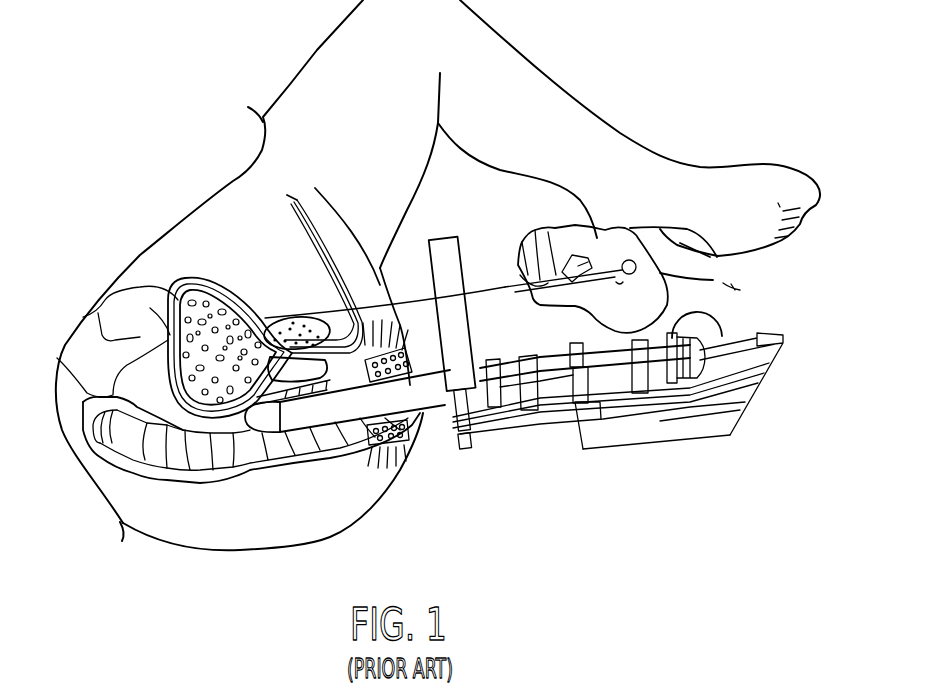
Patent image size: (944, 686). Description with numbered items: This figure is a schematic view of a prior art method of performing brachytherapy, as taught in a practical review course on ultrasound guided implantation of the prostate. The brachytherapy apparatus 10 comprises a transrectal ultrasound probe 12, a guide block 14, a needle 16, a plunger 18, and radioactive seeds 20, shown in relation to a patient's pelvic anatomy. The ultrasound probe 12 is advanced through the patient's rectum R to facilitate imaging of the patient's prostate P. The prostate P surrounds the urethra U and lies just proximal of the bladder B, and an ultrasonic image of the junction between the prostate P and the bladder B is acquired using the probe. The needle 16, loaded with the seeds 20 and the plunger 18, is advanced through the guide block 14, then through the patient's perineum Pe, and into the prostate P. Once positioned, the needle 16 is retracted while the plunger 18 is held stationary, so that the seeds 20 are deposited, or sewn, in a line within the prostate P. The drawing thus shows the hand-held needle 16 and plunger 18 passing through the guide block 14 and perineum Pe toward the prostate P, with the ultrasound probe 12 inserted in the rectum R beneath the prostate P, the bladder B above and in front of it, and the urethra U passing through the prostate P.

The brachytherapy apparatus 10 is at (786, 284).
The transrectal ultrasound probe 12 is at (434, 393).
The guide block 14 is at (452, 263).
The needle 16 is at (488, 291).
The plunger 18 is at (613, 266).
The radioactive seeds 20 is at (288, 330).
The bladder B is at (200, 292).
The urethra U is at (328, 265).
The prostate P is at (303, 322).
The perineum Pe is at (395, 302).
The rectum R is at (422, 410).